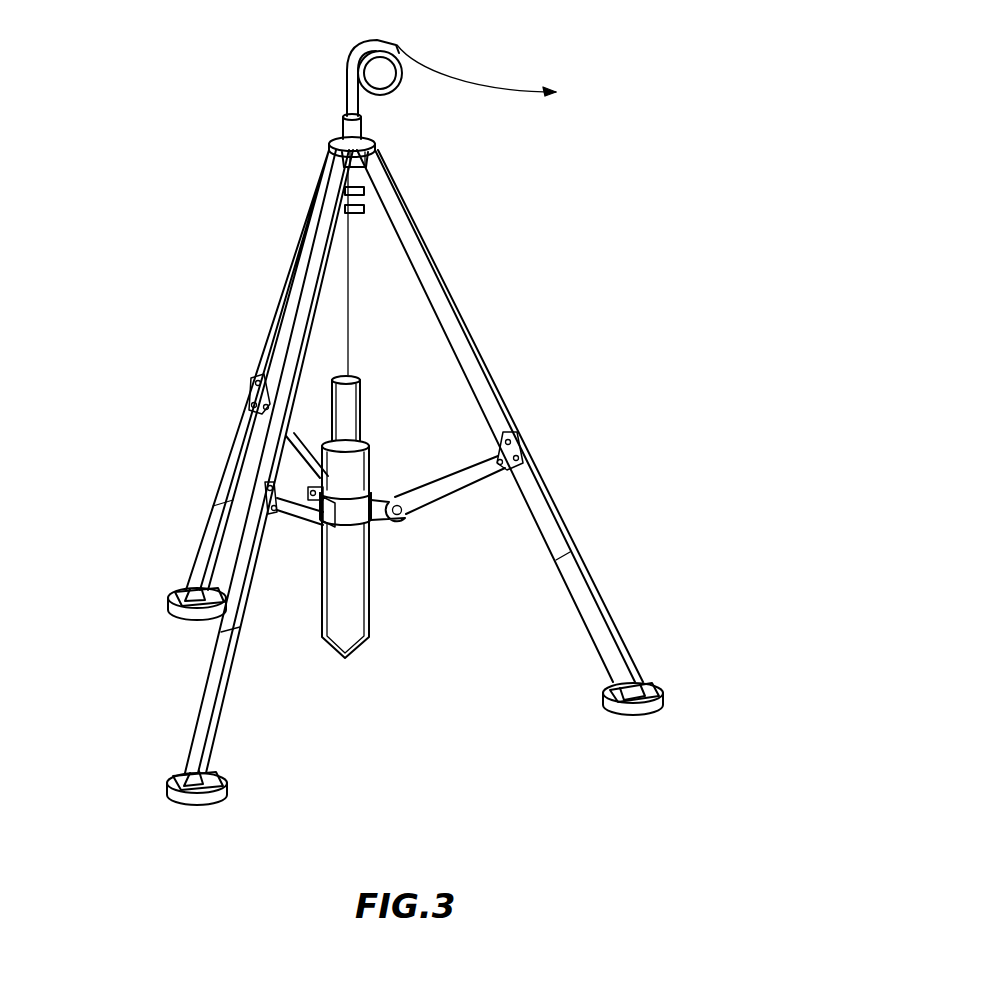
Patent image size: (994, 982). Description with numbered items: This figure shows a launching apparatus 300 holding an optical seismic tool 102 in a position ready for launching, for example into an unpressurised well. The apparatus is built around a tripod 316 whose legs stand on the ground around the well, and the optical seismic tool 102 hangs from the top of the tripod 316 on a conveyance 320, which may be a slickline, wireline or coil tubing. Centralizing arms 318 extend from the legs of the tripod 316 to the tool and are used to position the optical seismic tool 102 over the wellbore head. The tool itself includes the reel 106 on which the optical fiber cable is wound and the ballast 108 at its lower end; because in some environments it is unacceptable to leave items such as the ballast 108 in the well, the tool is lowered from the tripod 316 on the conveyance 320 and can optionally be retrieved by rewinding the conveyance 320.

The launching apparatus 300 is at (430, 417).
The optical seismic tool 102 is at (334, 541).
The reel 106 is at (360, 407).
The ballast 108 is at (389, 572).
The tripod 316 is at (465, 322).
The centralizing arms 318 is at (452, 487).
The conveyance 320 is at (352, 268).